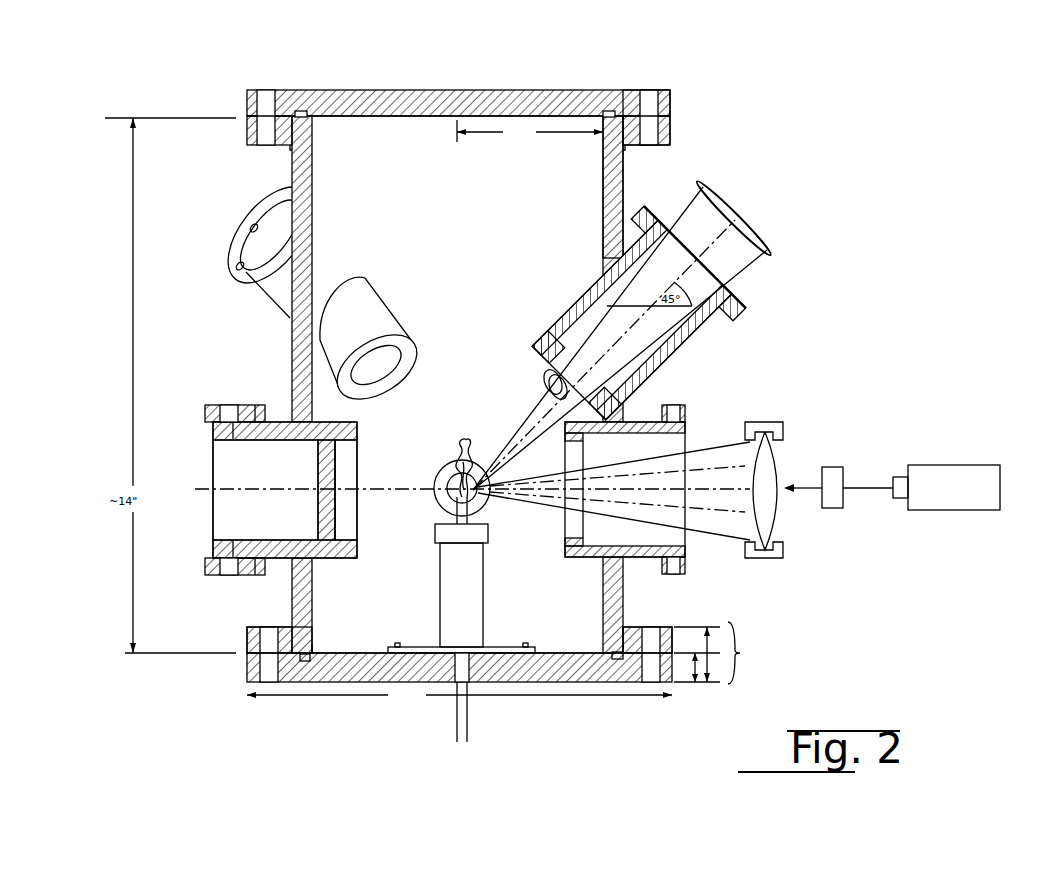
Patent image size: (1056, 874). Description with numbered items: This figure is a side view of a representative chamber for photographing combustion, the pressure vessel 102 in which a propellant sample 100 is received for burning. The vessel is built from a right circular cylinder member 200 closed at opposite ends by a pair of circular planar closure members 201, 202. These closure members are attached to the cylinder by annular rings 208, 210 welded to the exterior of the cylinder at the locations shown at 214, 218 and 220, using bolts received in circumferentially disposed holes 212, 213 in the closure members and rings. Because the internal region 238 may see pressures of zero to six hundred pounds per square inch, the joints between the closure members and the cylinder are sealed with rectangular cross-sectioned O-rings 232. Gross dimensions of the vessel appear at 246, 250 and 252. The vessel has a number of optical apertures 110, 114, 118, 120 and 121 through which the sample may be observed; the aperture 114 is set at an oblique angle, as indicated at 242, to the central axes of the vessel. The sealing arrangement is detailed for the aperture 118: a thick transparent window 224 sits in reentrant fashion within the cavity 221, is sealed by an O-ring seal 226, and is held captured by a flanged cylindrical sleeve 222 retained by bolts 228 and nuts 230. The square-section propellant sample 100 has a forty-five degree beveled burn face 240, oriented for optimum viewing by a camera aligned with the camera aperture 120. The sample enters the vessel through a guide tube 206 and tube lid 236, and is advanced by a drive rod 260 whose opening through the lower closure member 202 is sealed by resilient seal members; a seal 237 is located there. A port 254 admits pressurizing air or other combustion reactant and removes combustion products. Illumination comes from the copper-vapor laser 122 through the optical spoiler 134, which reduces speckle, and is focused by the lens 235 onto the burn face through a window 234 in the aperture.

The propellant sample 100 is at (452, 515).
The pressure vessel 102 is at (630, 168).
The optical aperture 110 is at (445, 470).
The optical aperture 114 is at (240, 232).
The optical aperture 118 is at (262, 420).
The camera optical aperture 120 is at (664, 190).
The optical aperture 121 is at (688, 418).
The copper-vapor laser 122 is at (921, 487).
The optical spoiler 134 is at (838, 467).
The right circular cylinder member 200 is at (285, 340).
The closure member 201 is at (426, 90).
The closure member 202 is at (318, 684).
The guide tube 206 is at (440, 602).
The annular ring 208 is at (643, 628).
The annular ring 210 is at (671, 120).
The holes 212 is at (268, 90).
The holes 213 is at (260, 684).
The weld 214 is at (328, 136).
The weld 218 is at (288, 627).
The weld 220 is at (316, 650).
The cavity 221 is at (332, 558).
The flanged cylindrical sleeve 222 is at (214, 548).
The transparent window 224 is at (322, 510).
The O-ring seal 226 is at (337, 422).
The bolts 228 is at (210, 420).
The nuts 230 is at (260, 405).
The O-rings 232 is at (300, 112).
The window 234 is at (765, 225).
The lens 235 is at (773, 523).
The tube lid 236 is at (490, 533).
The feedthrough 237 is at (468, 685).
The internal region 238 is at (457, 384).
The beveled burn face 240 is at (455, 497).
The oblique angle 242 is at (724, 290).
The dimension 246 is at (408, 704).
The dimension 250 is at (519, 142).
The dimension 252 is at (727, 653).
The port 254 is at (548, 383).
The drive rod 260 is at (458, 735).